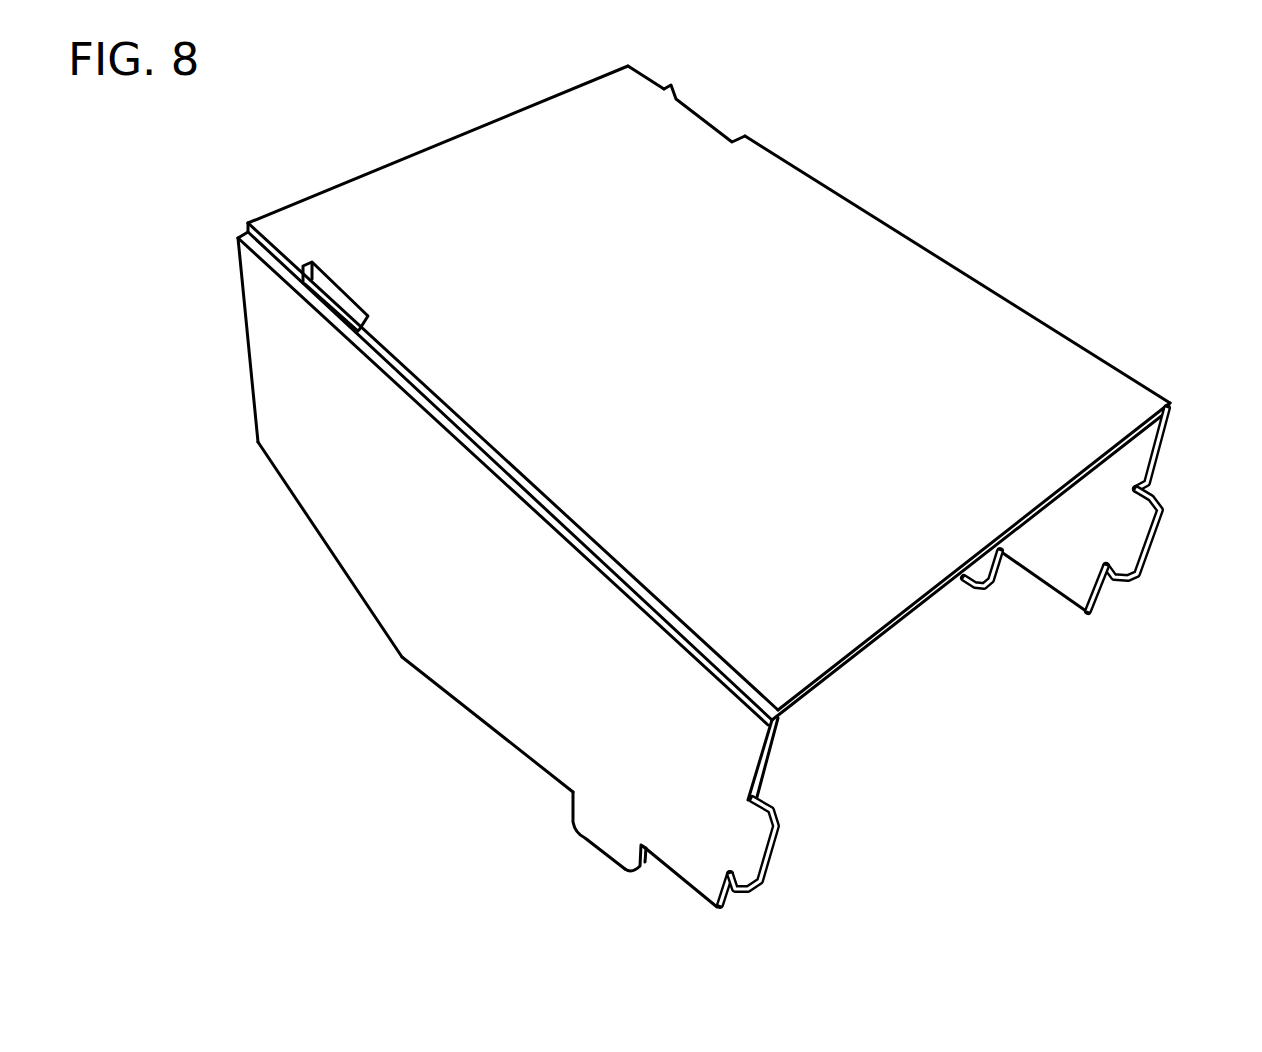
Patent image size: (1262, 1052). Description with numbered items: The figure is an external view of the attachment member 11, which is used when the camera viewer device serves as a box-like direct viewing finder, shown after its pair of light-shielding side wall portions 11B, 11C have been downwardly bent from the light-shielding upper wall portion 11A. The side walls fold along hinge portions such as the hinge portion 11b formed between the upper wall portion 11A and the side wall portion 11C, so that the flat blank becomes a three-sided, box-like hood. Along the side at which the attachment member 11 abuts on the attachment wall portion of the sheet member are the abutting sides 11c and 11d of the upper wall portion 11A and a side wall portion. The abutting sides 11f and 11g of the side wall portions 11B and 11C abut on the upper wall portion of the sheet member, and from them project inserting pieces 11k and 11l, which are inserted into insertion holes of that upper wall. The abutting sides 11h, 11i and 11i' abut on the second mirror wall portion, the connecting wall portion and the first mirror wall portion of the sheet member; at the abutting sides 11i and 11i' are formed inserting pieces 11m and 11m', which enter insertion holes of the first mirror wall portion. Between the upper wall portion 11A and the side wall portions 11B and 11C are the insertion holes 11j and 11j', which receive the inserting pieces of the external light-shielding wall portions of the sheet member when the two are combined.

The attachment member 11 is at (1014, 263).
The light-shielding upper wall portion 11A is at (862, 215).
The light-shielding side wall portion 11B is at (470, 700).
The light-shielding side wall portion 11C is at (457, 131).
The hinge portion 11b is at (627, 596).
The abutting side 11c is at (1172, 421).
The abutting side 11d is at (245, 350).
The abutting side 11f is at (728, 891).
The abutting side 11g is at (1155, 465).
The abutting side 11h is at (337, 570).
The abutting side 11i is at (551, 819).
The abutting side 11i' is at (1098, 623).
The insertion hole 11j is at (348, 278).
The insertion hole 11j' is at (721, 98).
The inserting piece 11k is at (760, 845).
The inserting piece 11l is at (1141, 548).
The inserting piece 11m is at (604, 874).
The inserting piece 11m' is at (969, 597).